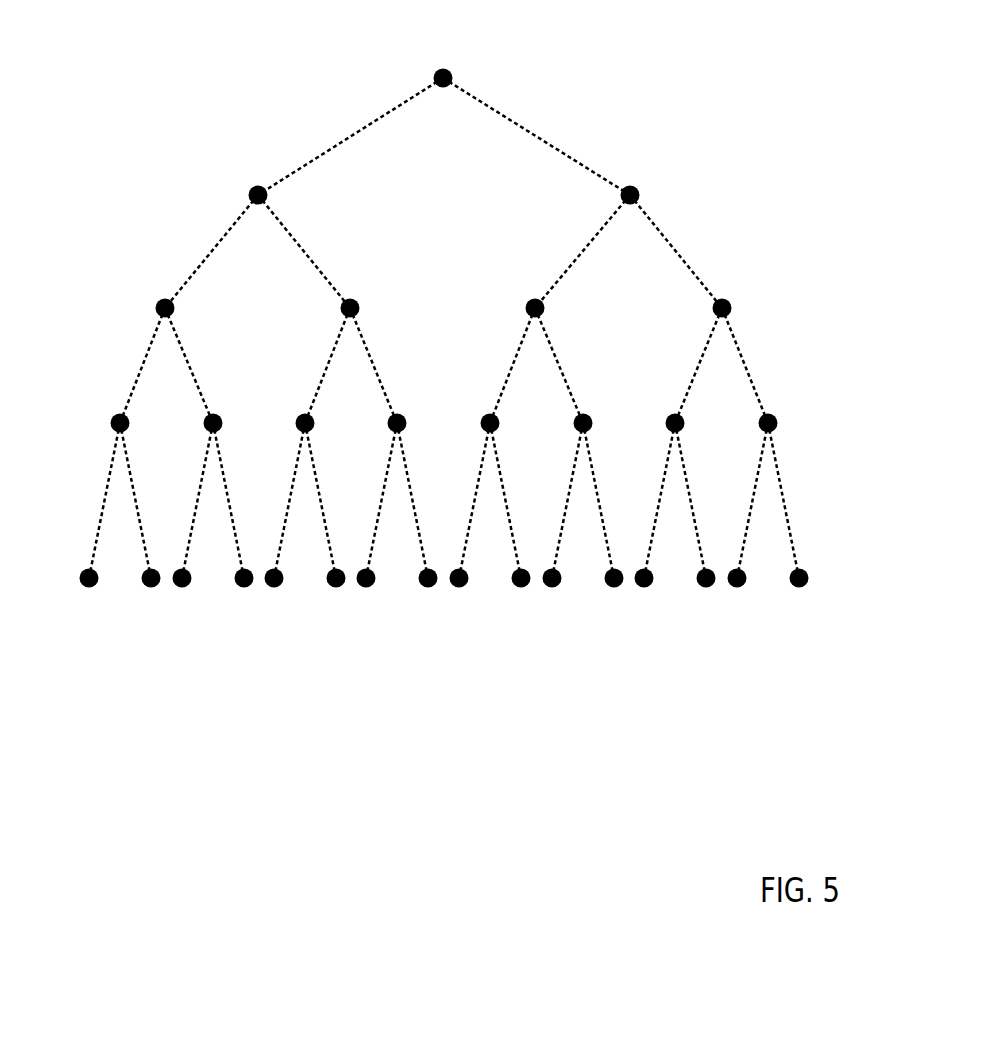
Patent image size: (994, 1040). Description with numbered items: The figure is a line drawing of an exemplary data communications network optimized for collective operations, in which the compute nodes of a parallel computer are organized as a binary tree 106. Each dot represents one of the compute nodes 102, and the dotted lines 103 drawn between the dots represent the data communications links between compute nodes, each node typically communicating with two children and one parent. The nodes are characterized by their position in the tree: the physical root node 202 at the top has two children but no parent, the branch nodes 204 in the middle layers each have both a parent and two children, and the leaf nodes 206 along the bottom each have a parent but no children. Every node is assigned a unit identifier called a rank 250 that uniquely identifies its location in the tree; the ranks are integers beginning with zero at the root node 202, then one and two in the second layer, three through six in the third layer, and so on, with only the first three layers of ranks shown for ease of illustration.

The data communications network optimized for collective operations (binary tree) 106 is at (225, 676).
The dotted lines (data communications links) 103 is at (360, 130).
The physical root node 202 is at (462, 67).
The branch nodes 204 is at (820, 142).
The leaf nodes 206 is at (820, 617).
The compute nodes 102 is at (521, 588).
The rank 250 is at (592, 203).